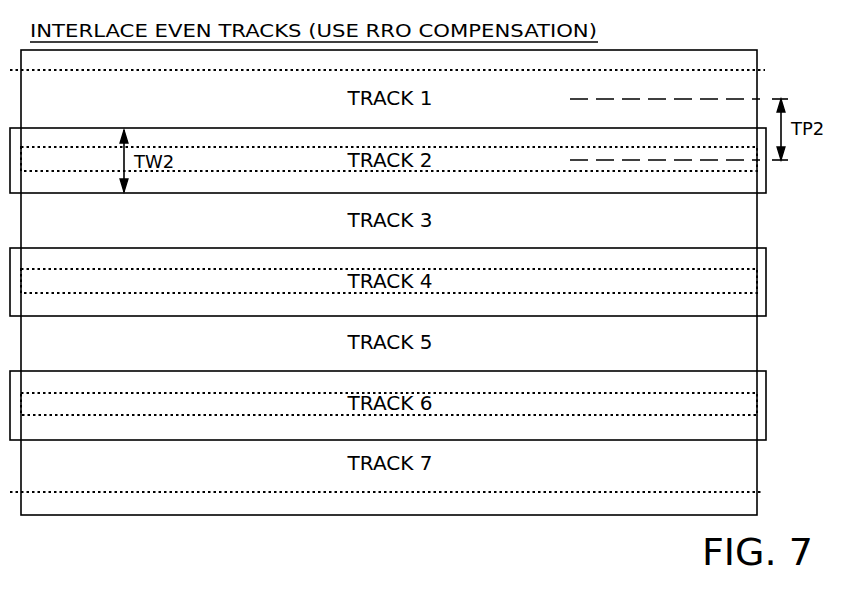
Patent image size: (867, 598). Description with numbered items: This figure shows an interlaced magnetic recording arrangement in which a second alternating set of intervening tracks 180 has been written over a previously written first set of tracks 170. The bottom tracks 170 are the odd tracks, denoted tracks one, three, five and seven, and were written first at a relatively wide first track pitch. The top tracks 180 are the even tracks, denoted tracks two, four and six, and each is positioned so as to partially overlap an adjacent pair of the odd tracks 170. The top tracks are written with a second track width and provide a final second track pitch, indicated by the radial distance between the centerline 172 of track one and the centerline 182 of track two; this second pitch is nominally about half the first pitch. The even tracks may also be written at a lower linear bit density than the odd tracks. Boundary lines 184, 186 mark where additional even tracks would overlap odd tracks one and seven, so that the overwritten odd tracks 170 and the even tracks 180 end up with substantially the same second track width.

The first set of tracks 170 is at (638, 78).
The centerline 172 is at (810, 98).
The second set of intervening tracks 180 is at (766, 280).
The centerline 182 is at (798, 162).
The boundary line 184 is at (725, 70).
The boundary line 186 is at (195, 495).